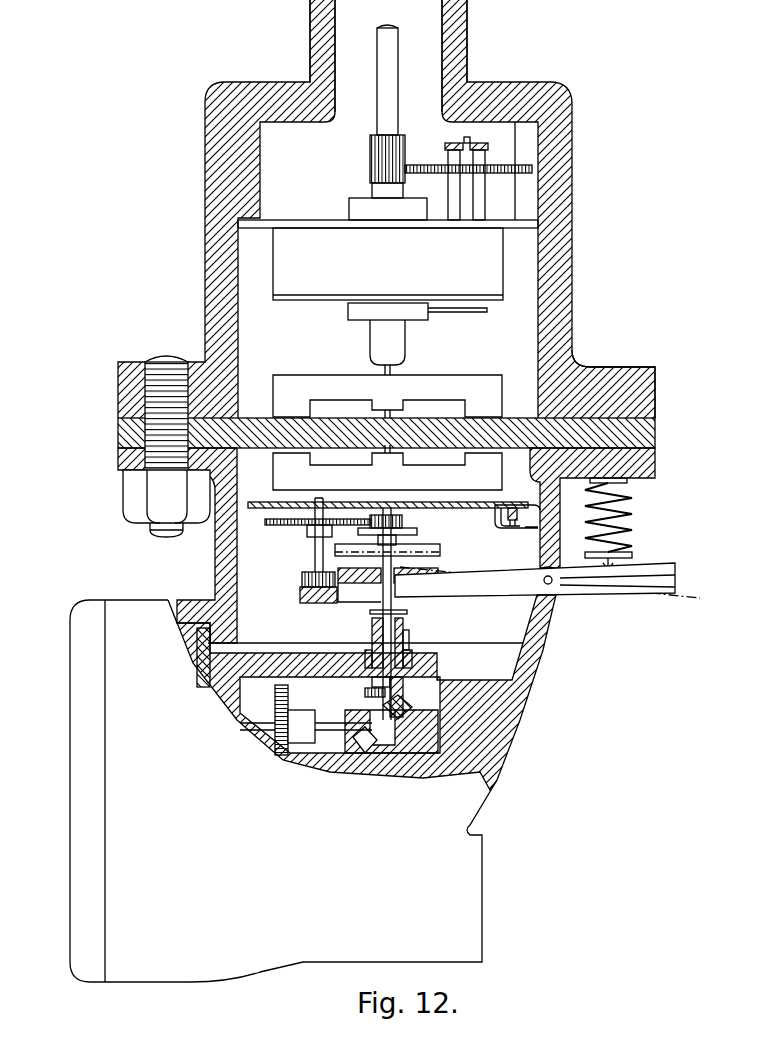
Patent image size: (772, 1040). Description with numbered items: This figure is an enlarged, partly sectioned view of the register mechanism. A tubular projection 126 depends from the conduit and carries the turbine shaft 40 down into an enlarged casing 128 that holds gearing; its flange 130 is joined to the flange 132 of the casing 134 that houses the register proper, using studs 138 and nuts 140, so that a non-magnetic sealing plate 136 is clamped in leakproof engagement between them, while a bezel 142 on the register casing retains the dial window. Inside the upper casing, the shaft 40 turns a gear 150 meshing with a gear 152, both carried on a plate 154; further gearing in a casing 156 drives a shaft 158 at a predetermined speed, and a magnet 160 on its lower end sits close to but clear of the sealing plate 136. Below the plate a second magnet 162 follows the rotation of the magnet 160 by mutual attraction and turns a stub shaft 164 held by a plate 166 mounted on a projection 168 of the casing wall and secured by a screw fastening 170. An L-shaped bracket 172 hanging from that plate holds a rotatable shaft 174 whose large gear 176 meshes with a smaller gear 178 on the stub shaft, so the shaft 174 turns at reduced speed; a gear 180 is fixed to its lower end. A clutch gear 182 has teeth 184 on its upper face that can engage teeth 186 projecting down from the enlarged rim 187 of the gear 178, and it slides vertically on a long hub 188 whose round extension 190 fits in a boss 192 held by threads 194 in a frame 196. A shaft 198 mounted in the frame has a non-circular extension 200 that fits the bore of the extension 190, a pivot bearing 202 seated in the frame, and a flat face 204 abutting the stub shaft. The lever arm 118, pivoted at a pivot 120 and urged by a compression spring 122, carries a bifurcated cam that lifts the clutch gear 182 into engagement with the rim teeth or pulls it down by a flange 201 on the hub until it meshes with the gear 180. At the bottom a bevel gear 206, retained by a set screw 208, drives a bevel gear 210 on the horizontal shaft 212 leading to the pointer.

The turbine shaft 40 is at (384, 60).
The lever arm 118 is at (672, 570).
The pivot 120 is at (556, 591).
The compression spring 122 is at (629, 528).
The tubular projection 126 is at (456, 35).
The casing 128 is at (560, 245).
The flange 130 is at (630, 375).
The flange 132 is at (652, 465).
The casing 134 is at (205, 606).
The sealing plate 136 is at (650, 437).
The stud 138 is at (153, 368).
The nut 140 is at (130, 490).
The bezel 142 is at (75, 692).
The gear 150 is at (407, 143).
The gear 152 is at (532, 169).
The plate 154 is at (497, 222).
The casing 156 is at (486, 278).
The shaft 158 is at (398, 370).
The magnet 160 is at (486, 395).
The second magnet 162 is at (286, 468).
The stub shaft 164 is at (391, 501).
The plate 166 is at (264, 520).
The projection 168 is at (526, 512).
The screw fastening 170 is at (515, 526).
The L-shaped bracket 172 is at (315, 552).
The rotatable shaft 174 is at (300, 578).
The large gear 176 is at (298, 540).
The smaller gear 178 is at (404, 521).
The gear 180 is at (305, 595).
The clutch gear 182 is at (382, 584).
The teeth 184 is at (410, 569).
The teeth 186 is at (424, 548).
The enlarged rim 187 is at (428, 532).
The hub 188 is at (377, 603).
The round extension 190 is at (403, 622).
The boss 192 is at (405, 638).
The threads 194 is at (370, 678).
The frame 196 is at (407, 658).
The shaft 198 is at (407, 684).
The extension 200 is at (372, 634).
The flange 201 is at (410, 614).
The pivot bearing 202 is at (400, 720).
The flat face 204 is at (376, 624).
The bevel gear 206 is at (403, 700).
The set screw 208 is at (365, 692).
The bevel gear 210 is at (367, 746).
The horizontal shaft 212 is at (252, 724).